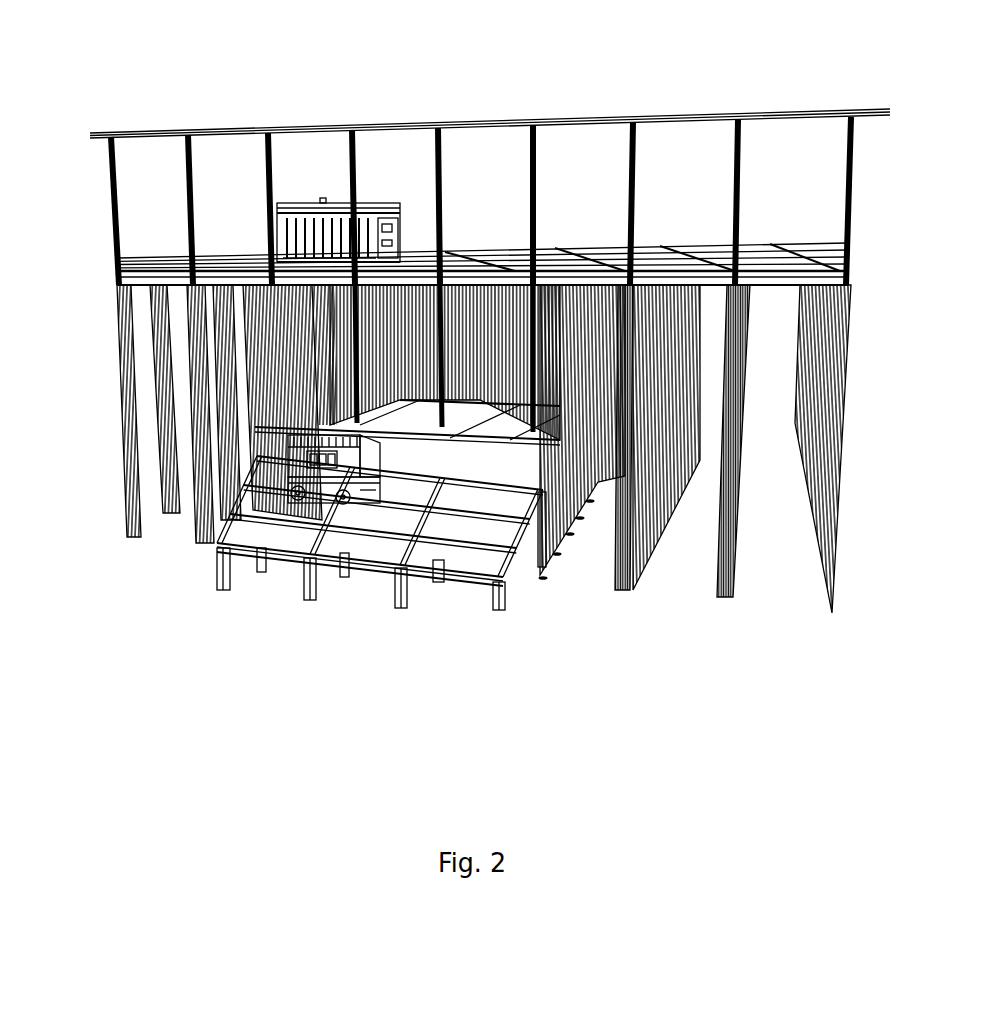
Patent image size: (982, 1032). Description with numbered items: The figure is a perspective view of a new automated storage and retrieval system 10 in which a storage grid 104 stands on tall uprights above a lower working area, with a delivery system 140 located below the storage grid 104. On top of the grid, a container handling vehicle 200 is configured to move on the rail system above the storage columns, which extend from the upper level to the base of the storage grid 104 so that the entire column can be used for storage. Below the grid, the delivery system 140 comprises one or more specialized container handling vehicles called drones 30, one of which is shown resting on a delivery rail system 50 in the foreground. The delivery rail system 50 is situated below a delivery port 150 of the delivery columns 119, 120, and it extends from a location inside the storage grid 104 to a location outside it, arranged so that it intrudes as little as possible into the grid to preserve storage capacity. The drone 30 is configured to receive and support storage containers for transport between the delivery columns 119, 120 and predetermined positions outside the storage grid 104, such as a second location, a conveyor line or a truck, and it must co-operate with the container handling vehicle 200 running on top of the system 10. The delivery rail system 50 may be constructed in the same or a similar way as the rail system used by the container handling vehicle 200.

The automated storage and retrieval system 10 is at (288, 93).
The storage grid 104 is at (166, 229).
The container handling vehicle 200 is at (367, 193).
The delivery column 120 is at (499, 305).
The delivery column 119 is at (308, 337).
The drone 30 is at (300, 467).
The delivery system 140 is at (275, 582).
The delivery rail system 50 is at (467, 573).
The delivery port 150 is at (510, 432).